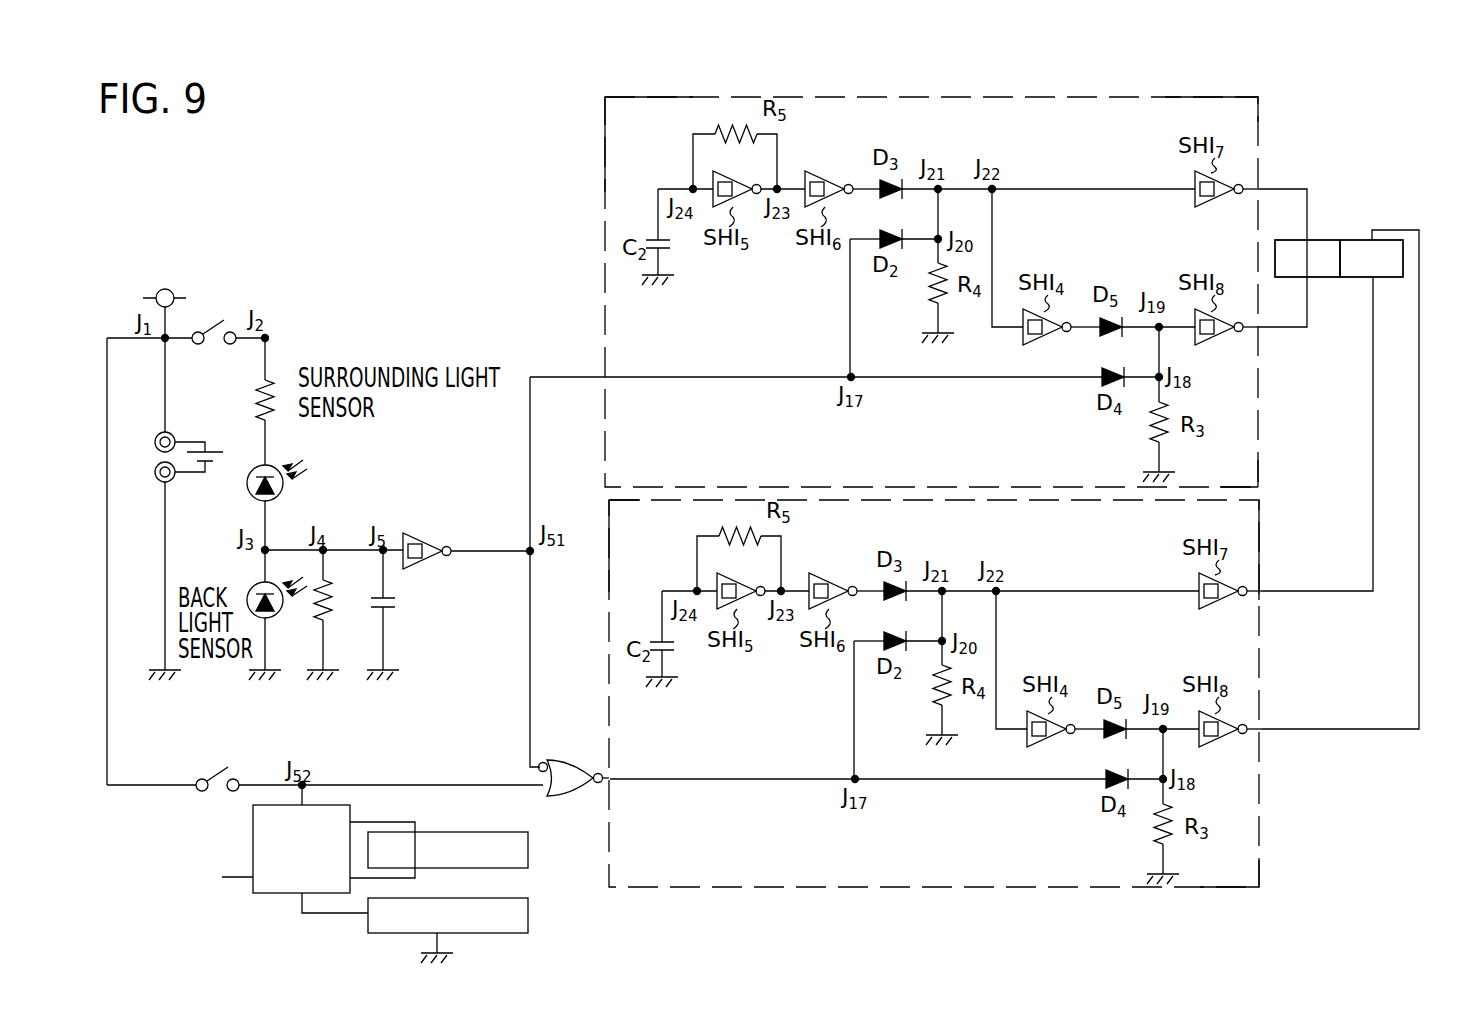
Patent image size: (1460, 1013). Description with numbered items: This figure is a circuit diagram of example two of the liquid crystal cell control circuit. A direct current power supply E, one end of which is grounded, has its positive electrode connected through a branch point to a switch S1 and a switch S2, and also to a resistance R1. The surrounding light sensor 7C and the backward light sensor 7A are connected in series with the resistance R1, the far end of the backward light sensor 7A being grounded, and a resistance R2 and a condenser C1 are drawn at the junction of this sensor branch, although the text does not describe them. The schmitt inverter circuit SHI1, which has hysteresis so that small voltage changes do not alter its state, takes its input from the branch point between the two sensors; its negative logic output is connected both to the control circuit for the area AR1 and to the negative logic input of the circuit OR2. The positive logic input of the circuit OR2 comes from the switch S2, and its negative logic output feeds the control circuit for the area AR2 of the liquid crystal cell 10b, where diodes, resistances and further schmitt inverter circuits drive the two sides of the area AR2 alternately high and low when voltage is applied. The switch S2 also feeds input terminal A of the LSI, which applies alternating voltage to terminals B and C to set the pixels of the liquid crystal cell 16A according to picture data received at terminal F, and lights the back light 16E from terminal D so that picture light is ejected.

The backward light sensor 7A is at (248, 592).
The surrounding light sensor 7C is at (281, 471).
The liquid crystal cell 10b is at (1343, 184).
The liquid crystal cell 16A is at (528, 850).
The back light 16E is at (528, 917).
The area AR1 is at (1317, 277).
The area AR2 is at (1356, 240).
The element LSI is at (253, 849).
The circuit OR2 is at (574, 793).
The switch S1 is at (214, 321).
The switch S2 is at (217, 766).
The direct current power supply E is at (176, 504).
The resistance R1 is at (248, 401).
The resistor R2 is at (338, 610).
The capacitor C1 is at (399, 610).
The schmitt inverter circuit SHI1 is at (418, 538).